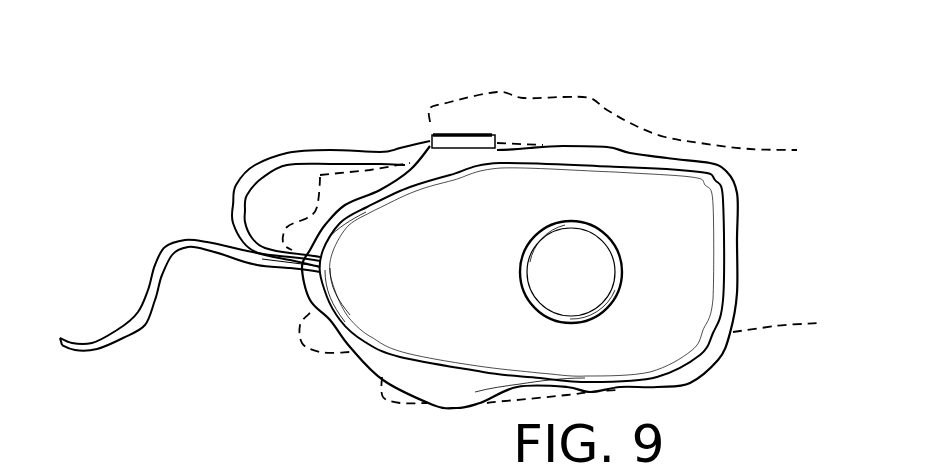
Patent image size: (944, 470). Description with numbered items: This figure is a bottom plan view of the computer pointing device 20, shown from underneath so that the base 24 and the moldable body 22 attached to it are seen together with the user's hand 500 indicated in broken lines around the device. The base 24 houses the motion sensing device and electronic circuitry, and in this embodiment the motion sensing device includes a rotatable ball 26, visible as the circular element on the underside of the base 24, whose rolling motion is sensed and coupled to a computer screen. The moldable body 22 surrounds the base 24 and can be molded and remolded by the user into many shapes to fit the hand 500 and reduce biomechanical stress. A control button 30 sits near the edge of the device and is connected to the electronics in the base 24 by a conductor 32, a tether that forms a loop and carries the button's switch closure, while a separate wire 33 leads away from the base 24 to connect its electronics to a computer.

The computer pointing device 20 is at (447, 225).
The moldable body 22 is at (732, 202).
The base 24 is at (727, 293).
The rotatable ball 26 is at (600, 313).
The control button 30 is at (430, 140).
The conductor 32 is at (232, 208).
The wire 33 is at (150, 270).
The user's hand 500 is at (523, 98).